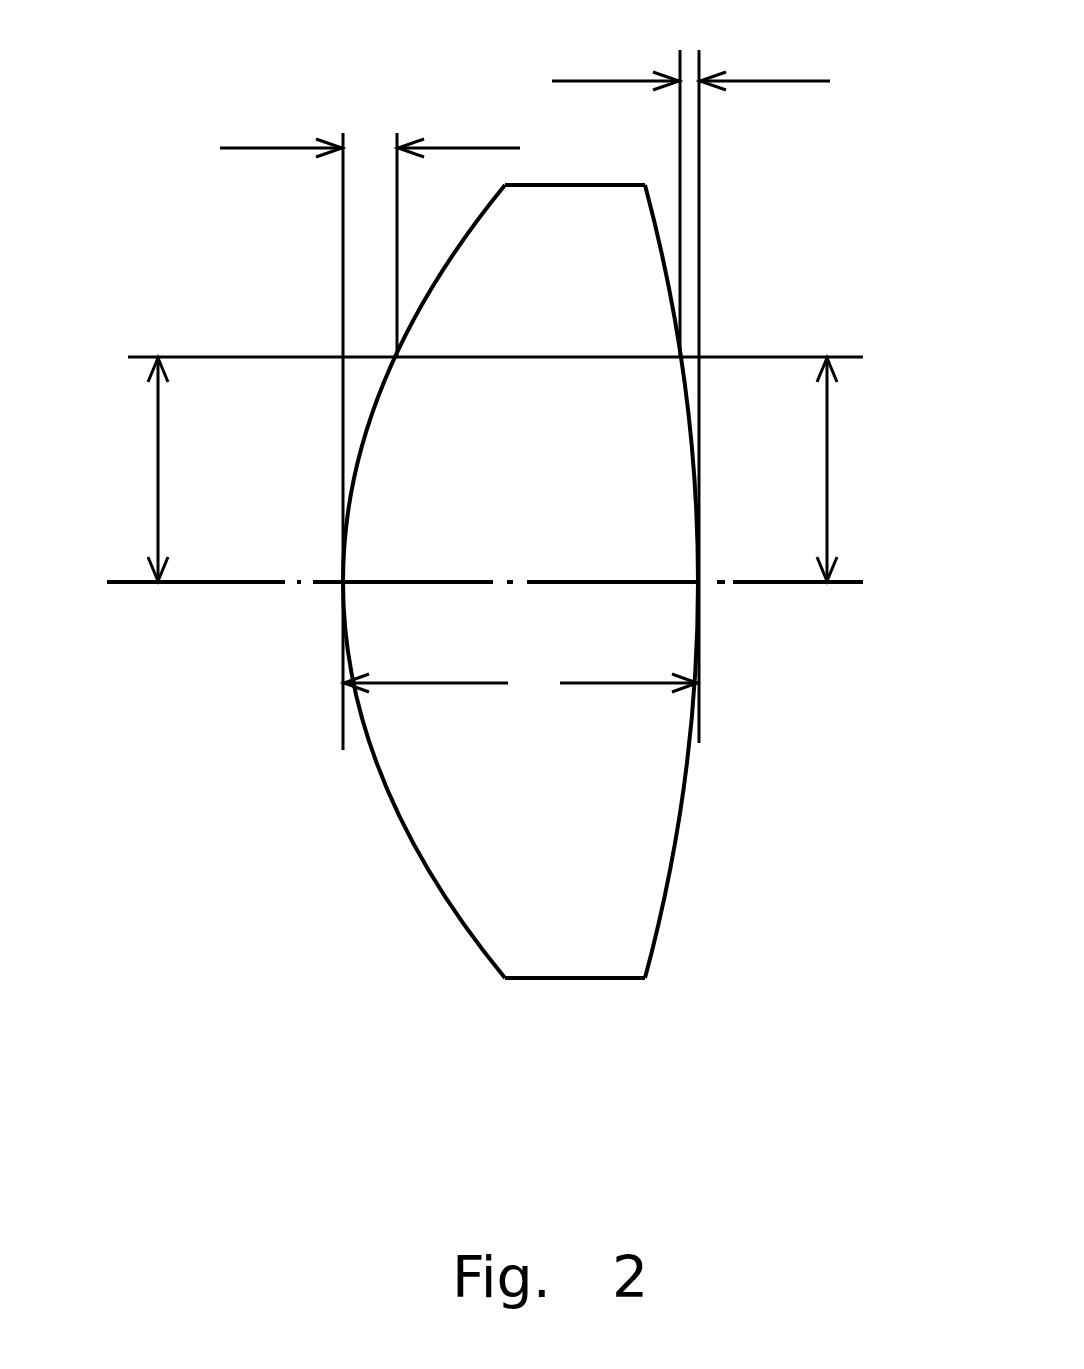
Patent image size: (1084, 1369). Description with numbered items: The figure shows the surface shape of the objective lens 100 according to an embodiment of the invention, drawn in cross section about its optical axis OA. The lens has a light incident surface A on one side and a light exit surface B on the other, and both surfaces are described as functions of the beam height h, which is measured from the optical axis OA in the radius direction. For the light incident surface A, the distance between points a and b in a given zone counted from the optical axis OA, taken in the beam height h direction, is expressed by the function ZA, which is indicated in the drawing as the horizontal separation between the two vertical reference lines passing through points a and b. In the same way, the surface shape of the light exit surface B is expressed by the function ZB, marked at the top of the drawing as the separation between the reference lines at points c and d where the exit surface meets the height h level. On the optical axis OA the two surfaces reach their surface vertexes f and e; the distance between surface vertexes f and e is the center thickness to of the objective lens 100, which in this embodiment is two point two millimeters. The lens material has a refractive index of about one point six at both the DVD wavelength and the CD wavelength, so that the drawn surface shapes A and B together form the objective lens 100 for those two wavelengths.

The objective lens 100 is at (557, 613).
The light incident surface A is at (407, 835).
The light exit surface B is at (717, 581).
The optical axis OA is at (787, 583).
The beam height h is at (498, 469).
The distance function of light incident surface ZA is at (369, 417).
The surface shape of light exit surface ZB is at (691, 377).
The center thickness to is at (520, 683).
The point on light incident surface zone a is at (343, 355).
The point on light incident surface zone b is at (400, 350).
The point on vertex tangent plane of surface B at height h c is at (705, 355).
The point on surface B at height h d is at (678, 362).
The surface vertex of light exit surface e is at (702, 578).
The surface vertex of light incident surface f is at (343, 578).